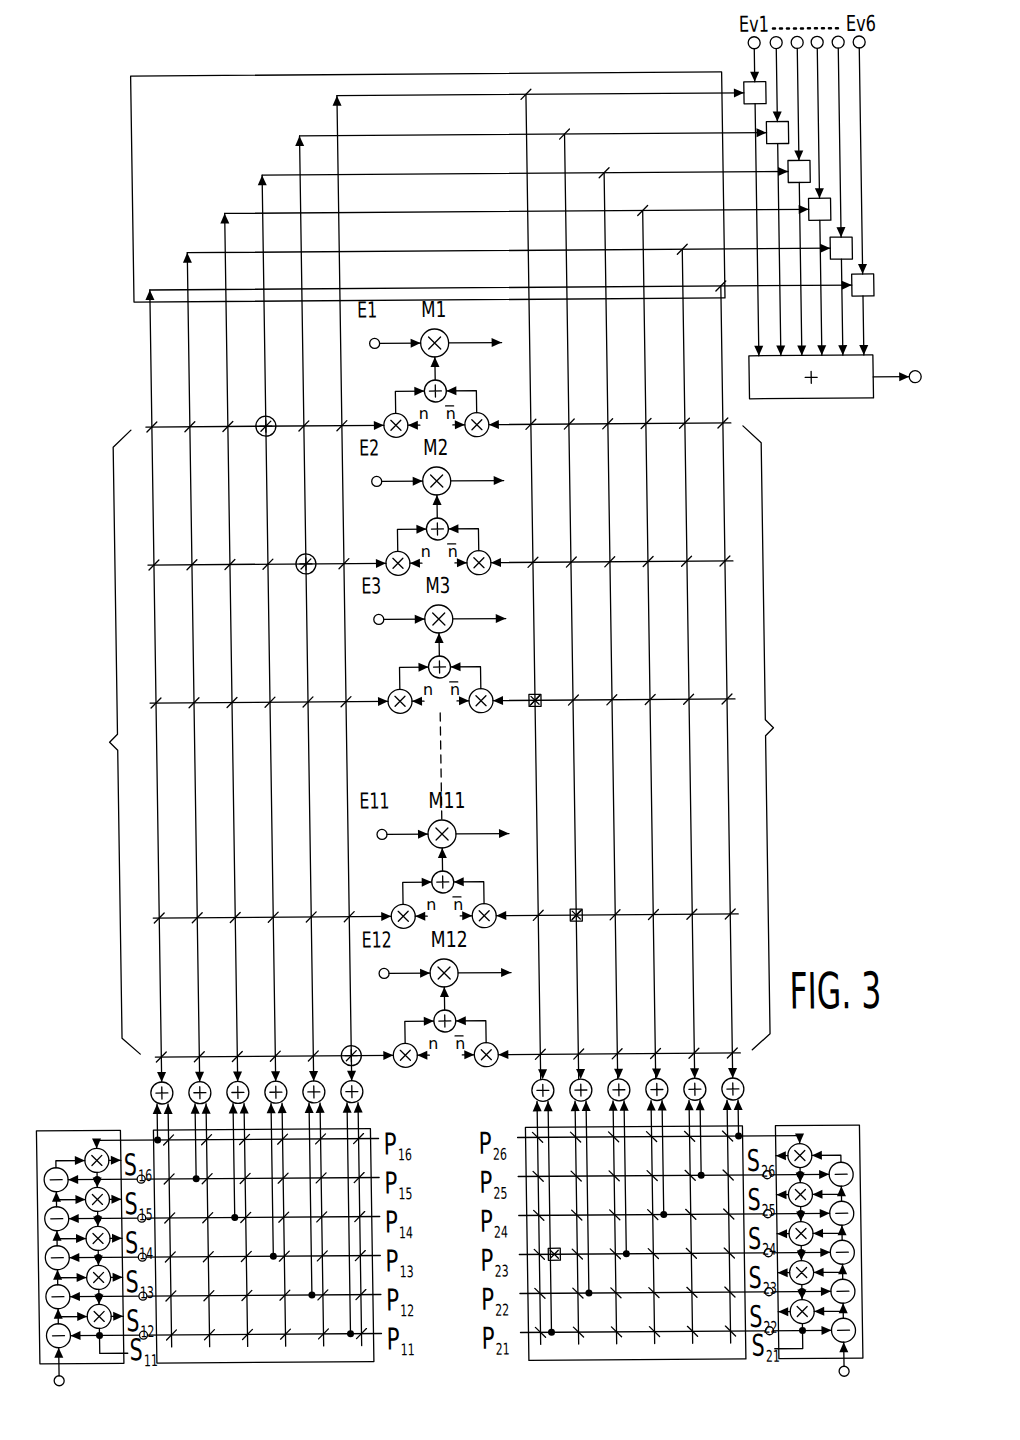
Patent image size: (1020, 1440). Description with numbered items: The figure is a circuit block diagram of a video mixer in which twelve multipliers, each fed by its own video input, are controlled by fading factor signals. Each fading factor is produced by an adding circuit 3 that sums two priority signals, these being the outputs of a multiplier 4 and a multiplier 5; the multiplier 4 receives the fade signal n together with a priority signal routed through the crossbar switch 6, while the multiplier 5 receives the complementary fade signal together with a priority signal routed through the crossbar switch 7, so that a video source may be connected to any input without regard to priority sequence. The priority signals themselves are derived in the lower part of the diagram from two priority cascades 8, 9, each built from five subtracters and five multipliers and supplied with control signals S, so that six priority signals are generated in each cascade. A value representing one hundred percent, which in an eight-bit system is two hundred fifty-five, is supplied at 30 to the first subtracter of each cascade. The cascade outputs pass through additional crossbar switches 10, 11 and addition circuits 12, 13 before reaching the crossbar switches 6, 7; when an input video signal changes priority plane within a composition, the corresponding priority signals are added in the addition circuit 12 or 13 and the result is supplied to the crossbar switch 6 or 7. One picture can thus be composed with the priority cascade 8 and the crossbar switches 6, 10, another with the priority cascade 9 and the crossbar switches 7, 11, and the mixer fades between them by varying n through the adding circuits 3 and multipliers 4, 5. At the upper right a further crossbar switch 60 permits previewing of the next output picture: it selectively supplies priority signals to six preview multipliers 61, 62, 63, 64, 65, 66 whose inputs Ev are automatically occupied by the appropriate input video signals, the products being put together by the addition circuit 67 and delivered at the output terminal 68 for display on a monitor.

The adding circuit 3 is at (448, 383).
The multiplier 4 is at (391, 415).
The multiplier 5 is at (488, 415).
The crossbar switch 6 is at (113, 742).
The crossbar switch 7 is at (771, 738).
The priority cascade 8 is at (76, 1134).
The priority cascade 9 is at (821, 1136).
The crossbar switch 10 is at (150, 1154).
The crossbar switch 11 is at (737, 1144).
The addition circuit 12 is at (272, 1080).
The addition circuit 13 is at (612, 1080).
The value 1 input 30 is at (490, 1377).
The crossbar switch 60 is at (491, 170).
The multiplier 61 is at (760, 108).
The multiplier 62 is at (778, 144).
The multiplier 63 is at (798, 184).
The multiplier 64 is at (838, 212).
The multiplier 65 is at (859, 252).
The multiplier 66 is at (880, 288).
The addition circuit 67 is at (870, 363).
The output terminal 68 is at (916, 388).